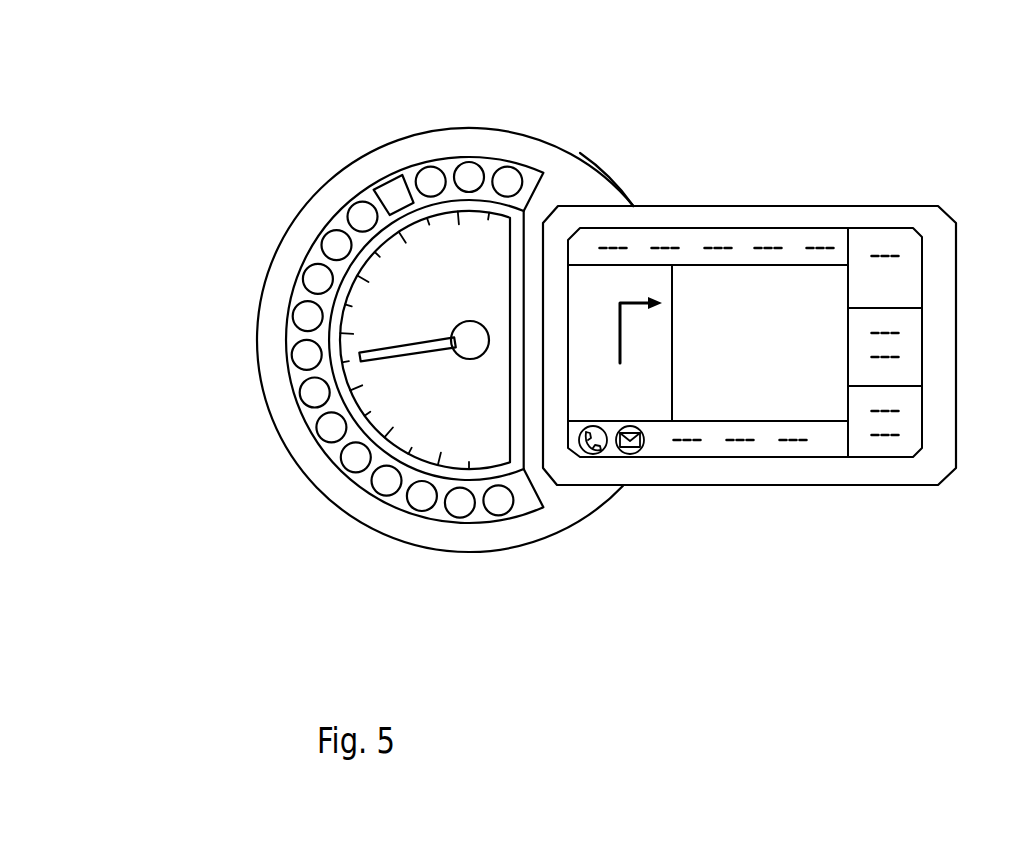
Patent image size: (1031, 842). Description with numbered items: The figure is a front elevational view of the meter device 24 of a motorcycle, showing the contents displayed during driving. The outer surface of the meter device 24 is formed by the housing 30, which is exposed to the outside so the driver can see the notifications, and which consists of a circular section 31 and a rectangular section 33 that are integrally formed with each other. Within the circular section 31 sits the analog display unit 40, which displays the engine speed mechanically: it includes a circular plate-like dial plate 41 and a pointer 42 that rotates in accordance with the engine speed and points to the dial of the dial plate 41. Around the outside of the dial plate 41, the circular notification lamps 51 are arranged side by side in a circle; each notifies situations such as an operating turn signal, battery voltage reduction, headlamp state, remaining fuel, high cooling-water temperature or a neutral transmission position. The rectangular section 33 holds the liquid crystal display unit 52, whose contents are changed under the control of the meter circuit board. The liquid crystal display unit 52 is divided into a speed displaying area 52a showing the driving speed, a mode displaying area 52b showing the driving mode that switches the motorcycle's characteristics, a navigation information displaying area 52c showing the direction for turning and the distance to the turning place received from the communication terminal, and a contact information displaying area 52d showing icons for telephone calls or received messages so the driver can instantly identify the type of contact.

The meter device 24 is at (185, 152).
The housing 30 is at (749, 290).
The circular section 31 is at (585, 172).
The rectangular section 33 is at (678, 206).
The analog display unit 40 is at (320, 340).
The dial plate 41 is at (370, 278).
The pointer 42 is at (392, 350).
The notification lamps 51 is at (350, 465).
The liquid crystal display unit 52 is at (779, 358).
The speed displaying area 52a is at (765, 415).
The mode displaying area 52b is at (915, 262).
The navigation information displaying area 52c is at (580, 347).
The contact information displaying area 52d is at (663, 445).